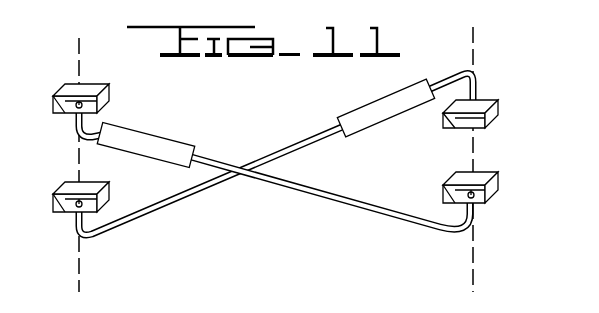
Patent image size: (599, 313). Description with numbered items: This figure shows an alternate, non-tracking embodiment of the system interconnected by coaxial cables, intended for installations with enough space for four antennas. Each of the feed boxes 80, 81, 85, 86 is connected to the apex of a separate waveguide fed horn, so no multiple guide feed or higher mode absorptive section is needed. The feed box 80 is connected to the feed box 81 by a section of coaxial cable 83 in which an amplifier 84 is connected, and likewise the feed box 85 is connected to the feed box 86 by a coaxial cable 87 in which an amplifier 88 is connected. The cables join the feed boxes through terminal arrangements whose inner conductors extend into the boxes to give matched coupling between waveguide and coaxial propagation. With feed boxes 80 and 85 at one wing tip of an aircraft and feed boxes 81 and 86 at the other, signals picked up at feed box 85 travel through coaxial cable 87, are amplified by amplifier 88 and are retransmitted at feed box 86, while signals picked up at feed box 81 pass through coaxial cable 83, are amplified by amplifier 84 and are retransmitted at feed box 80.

The feed box 80 is at (53, 96).
The feed box 81 is at (499, 182).
The coaxial cable 83 is at (350, 205).
The amplifier 84 is at (158, 137).
The feed box 85 is at (53, 194).
The feed box 86 is at (499, 108).
The coaxial cable 87 is at (177, 201).
The amplifier 88 is at (378, 100).